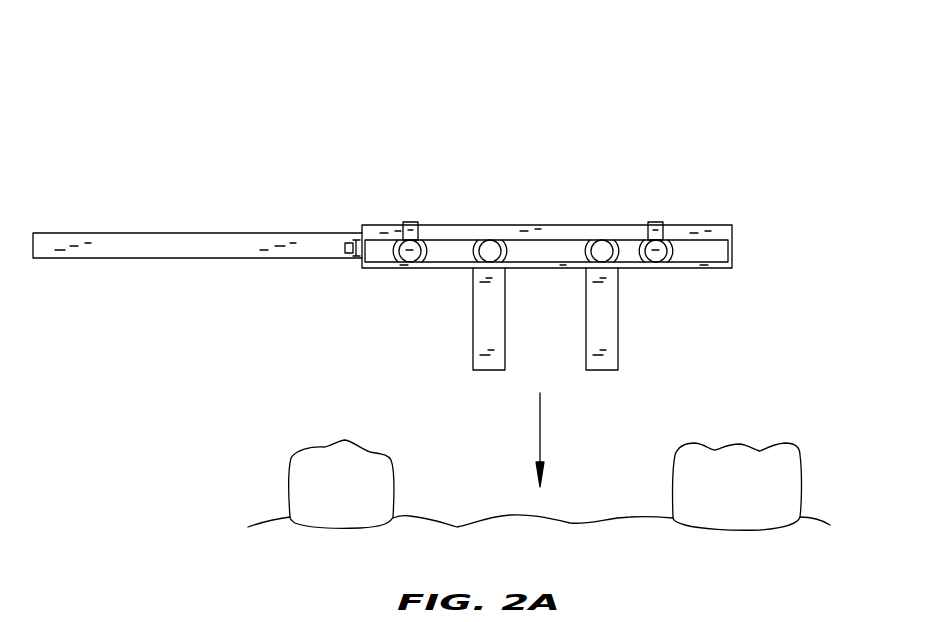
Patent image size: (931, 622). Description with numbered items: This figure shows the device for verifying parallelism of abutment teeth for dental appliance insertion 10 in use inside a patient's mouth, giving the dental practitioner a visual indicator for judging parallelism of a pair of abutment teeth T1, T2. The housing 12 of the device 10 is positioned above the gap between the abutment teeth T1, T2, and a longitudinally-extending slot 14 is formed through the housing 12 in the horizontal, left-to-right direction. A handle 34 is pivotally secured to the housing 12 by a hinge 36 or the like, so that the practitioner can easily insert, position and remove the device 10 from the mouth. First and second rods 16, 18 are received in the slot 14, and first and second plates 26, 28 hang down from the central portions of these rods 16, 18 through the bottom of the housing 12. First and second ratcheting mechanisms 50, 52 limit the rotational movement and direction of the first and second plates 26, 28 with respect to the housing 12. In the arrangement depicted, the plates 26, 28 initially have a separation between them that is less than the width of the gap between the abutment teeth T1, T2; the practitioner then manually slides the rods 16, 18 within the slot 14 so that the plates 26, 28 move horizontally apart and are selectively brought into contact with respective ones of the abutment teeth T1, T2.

The device for verifying parallelism of abutment teeth for dental appliance insertio 10 is at (114, 72).
The housing 12 is at (708, 222).
The longitudinally-extending slot 14 is at (444, 230).
The first rod 16 is at (402, 265).
The second rod 18 is at (655, 266).
The first plate 26 is at (473, 338).
The second plate 28 is at (618, 357).
The handle 34 is at (77, 228).
The hinge 36 is at (347, 258).
The first ratcheting mechanism 50 is at (407, 222).
The second ratcheting mechanism 52 is at (652, 222).
The abutment tooth T1 is at (290, 462).
The abutment tooth T2 is at (787, 442).